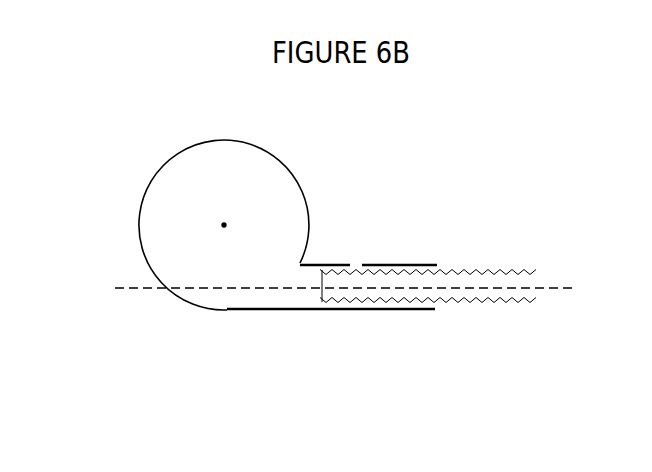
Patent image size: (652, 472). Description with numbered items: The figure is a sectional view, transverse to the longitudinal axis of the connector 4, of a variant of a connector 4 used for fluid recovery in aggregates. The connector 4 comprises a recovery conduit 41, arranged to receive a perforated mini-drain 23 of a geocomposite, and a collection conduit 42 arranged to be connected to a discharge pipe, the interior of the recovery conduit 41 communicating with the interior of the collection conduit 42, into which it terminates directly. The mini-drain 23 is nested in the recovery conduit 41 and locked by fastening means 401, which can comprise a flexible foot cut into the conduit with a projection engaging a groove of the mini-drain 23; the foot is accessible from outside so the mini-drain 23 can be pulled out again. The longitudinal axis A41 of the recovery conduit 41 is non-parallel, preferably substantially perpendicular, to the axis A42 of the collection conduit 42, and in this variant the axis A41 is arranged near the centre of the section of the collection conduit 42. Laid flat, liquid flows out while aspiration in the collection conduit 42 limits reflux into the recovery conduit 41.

The connector 4 is at (333, 258).
The perforated mini-drain 23 is at (523, 304).
The recovery conduit 41 is at (288, 310).
The collection conduit 42 is at (167, 162).
The fastening means 401 is at (364, 270).
The longitudinal axis of the recovery conduit A41 is at (142, 290).
The axis of the collection conduit A42 is at (224, 225).